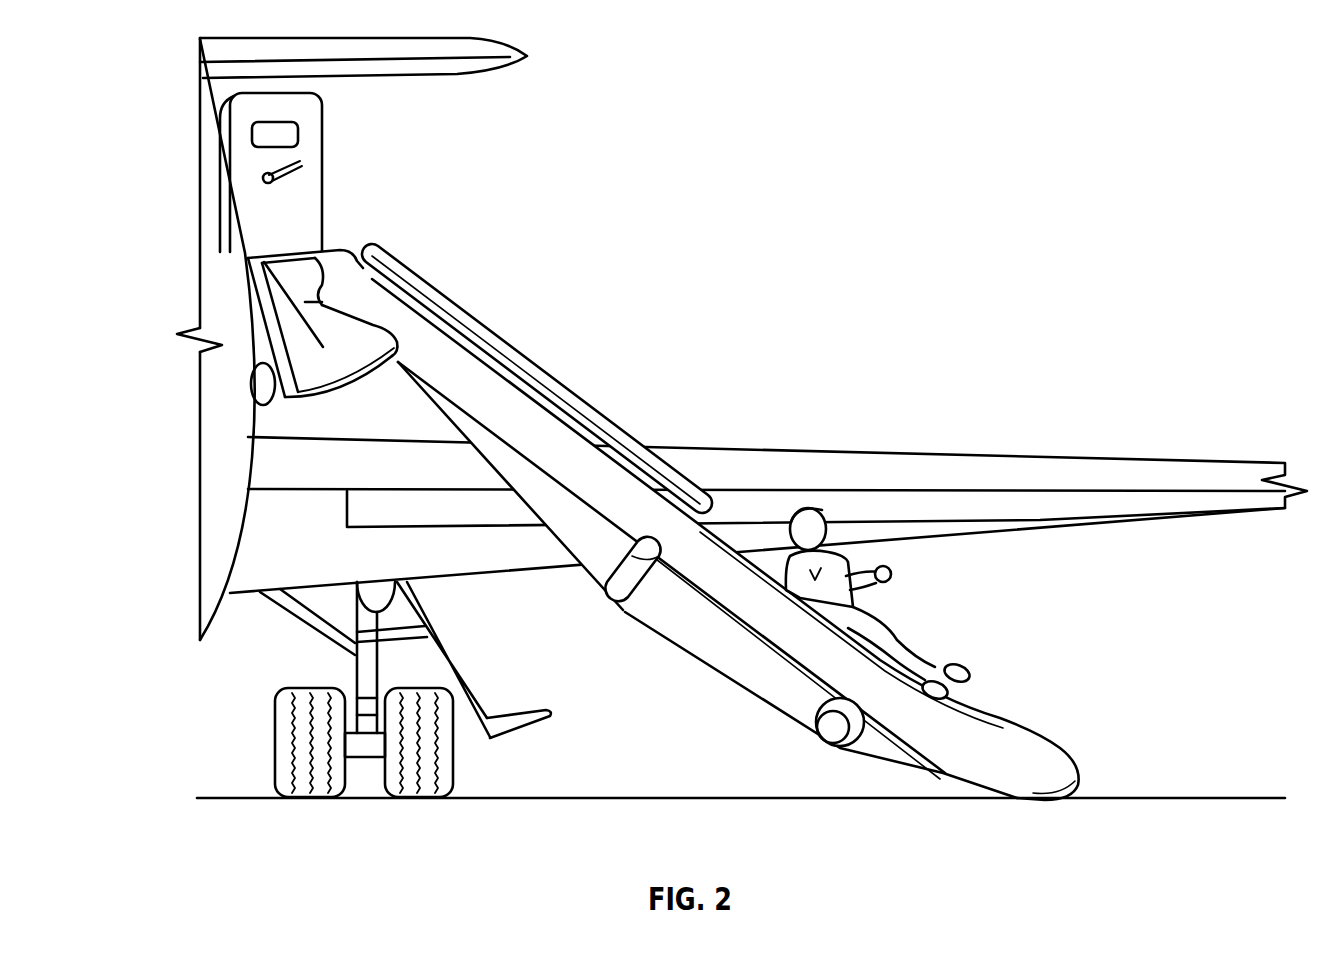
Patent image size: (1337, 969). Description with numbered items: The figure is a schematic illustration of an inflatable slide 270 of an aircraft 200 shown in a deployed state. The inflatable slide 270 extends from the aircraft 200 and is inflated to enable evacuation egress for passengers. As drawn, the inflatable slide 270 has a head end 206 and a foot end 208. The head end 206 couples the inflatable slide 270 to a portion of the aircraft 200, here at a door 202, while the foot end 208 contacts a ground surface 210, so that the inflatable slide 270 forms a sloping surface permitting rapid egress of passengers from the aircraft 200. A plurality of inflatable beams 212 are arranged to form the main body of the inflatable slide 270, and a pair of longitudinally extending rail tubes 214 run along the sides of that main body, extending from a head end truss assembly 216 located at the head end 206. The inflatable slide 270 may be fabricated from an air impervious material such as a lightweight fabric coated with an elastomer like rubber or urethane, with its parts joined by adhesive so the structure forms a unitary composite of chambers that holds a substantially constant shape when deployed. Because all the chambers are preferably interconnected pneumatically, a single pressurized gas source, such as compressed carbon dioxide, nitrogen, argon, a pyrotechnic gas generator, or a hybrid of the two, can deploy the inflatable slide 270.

The aircraft 200 is at (222, 533).
The door 202 is at (302, 203).
The head end 206 is at (605, 511).
The foot end 208 is at (1042, 716).
The ground surface 210 is at (1182, 799).
The inflatable beams 212 is at (583, 470).
The rail tubes 214 is at (465, 330).
The head end truss assembly 216 is at (263, 283).
The inflatable slide 270 is at (636, 650).